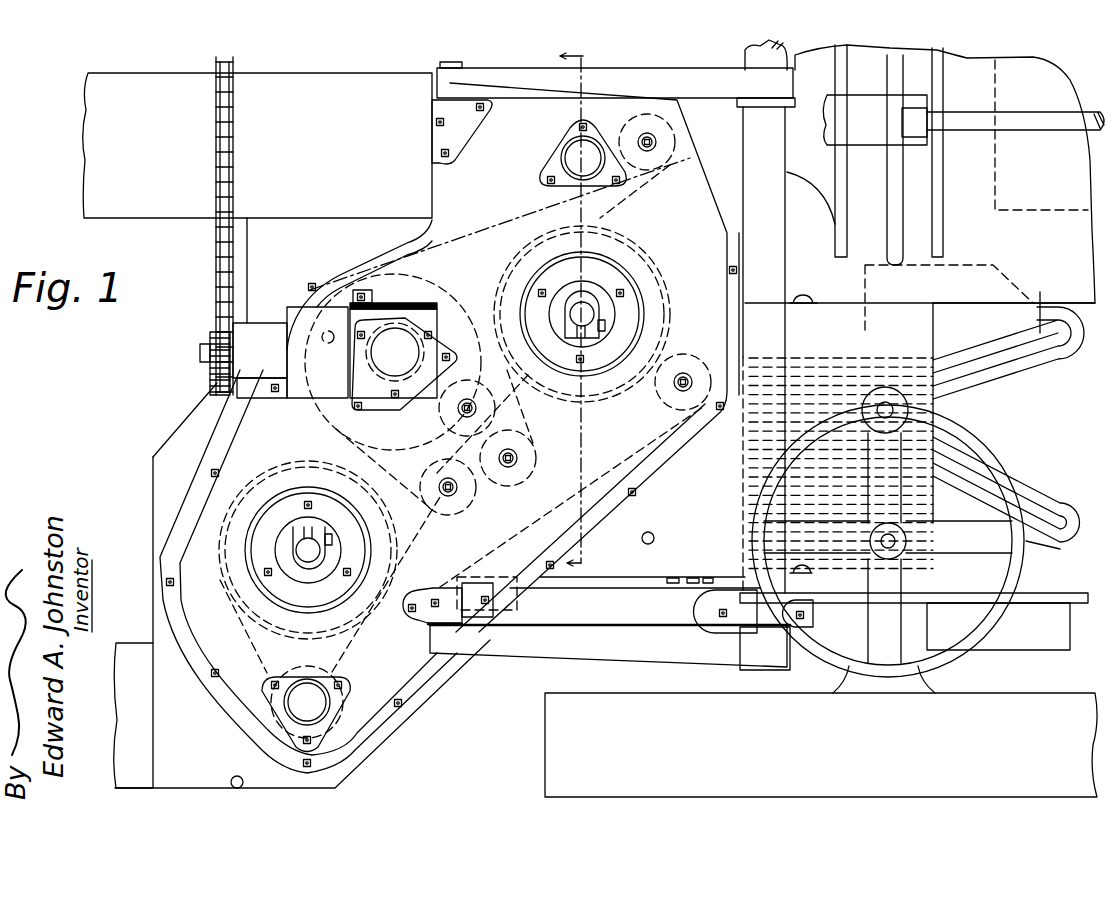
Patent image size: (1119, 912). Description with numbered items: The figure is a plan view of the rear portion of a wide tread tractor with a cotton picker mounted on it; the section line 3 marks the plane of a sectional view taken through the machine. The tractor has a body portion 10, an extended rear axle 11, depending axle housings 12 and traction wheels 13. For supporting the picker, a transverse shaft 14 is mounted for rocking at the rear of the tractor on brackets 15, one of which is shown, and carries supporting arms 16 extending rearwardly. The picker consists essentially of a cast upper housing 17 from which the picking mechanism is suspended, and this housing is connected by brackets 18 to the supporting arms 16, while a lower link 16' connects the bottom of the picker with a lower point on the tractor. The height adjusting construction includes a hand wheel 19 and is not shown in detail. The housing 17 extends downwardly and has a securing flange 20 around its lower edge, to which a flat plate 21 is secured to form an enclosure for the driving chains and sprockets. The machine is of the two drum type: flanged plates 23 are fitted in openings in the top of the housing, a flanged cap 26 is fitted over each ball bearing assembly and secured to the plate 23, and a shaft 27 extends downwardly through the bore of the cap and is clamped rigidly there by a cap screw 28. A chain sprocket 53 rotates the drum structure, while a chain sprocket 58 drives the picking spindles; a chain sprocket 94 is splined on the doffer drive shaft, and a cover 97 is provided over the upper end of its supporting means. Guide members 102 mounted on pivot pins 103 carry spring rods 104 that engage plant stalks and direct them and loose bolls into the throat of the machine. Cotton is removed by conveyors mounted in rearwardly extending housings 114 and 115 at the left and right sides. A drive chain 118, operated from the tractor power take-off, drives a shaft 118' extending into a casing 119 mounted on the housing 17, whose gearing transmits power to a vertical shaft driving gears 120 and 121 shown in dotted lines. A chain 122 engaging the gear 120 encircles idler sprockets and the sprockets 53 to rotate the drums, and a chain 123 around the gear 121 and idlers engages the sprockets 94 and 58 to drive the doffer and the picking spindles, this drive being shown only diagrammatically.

The section line 3 is at (583, 307).
The body portion 10 is at (1072, 258).
The rear axle 11 is at (920, 284).
The axle housings 12 is at (1037, 612).
The traction wheels 13 is at (1023, 704).
The transverse shaft 14 is at (750, 119).
The brackets 15 is at (730, 607).
The supporting arms 16 is at (612, 369).
The lower link 16' is at (610, 603).
The upper housing 17 is at (193, 563).
The brackets 18 is at (431, 135).
The hand wheel 19 is at (996, 454).
The securing flange 20 is at (203, 492).
The flat plate 21 is at (184, 431).
The flanged plates 23 is at (585, 301).
The flanged cap 26 is at (601, 325).
The shaft 27 is at (597, 315).
The cap screw 28 is at (606, 323).
The chain sprocket 53 is at (596, 230).
The chain sprocket 58 is at (465, 527).
The chain sprocket 94 is at (561, 137).
The cover 97 is at (567, 162).
The guide members 102 is at (1003, 342).
The pivot pins 103 is at (808, 288).
The spring rods 104 is at (960, 470).
The housing 114 is at (136, 212).
The housing 115 is at (122, 655).
The drive chain 118 is at (198, 226).
The shaft 118' is at (190, 363).
The casing 119 is at (291, 309).
The gear 120 is at (426, 307).
The gear 121 is at (451, 291).
The chain 122 is at (571, 497).
The chain 123 is at (518, 216).